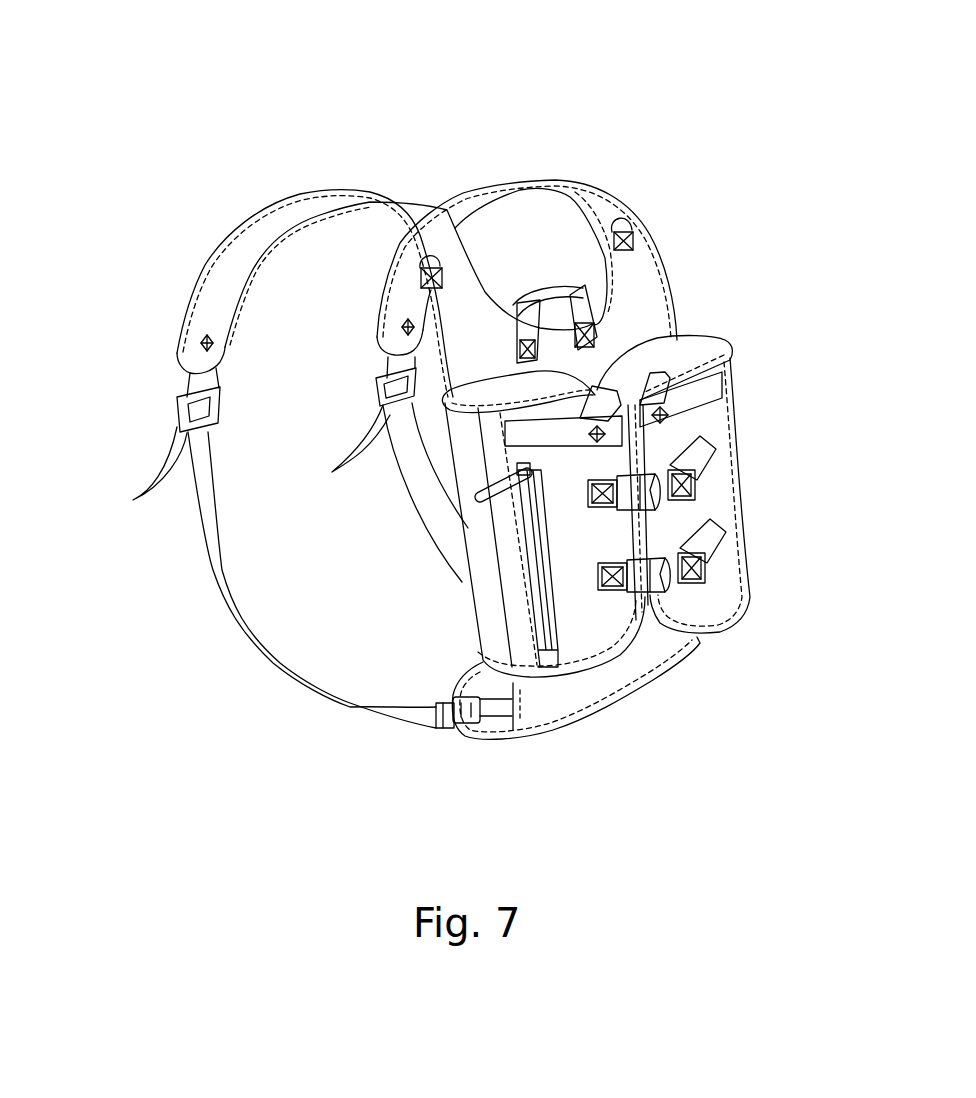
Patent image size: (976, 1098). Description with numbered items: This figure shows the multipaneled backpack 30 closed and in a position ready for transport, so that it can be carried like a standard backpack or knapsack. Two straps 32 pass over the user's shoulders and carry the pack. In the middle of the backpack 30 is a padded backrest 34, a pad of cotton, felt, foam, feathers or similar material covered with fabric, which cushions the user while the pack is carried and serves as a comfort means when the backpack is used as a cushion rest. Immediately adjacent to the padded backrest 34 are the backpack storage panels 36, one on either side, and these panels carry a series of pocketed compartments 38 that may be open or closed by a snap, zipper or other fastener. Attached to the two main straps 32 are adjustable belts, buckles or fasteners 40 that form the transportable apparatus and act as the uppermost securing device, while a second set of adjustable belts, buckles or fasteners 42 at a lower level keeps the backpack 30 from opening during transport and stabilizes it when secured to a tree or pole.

The multipaneled backpack 30 is at (229, 88).
The straps 32 is at (398, 216).
The padded backrest 34 is at (623, 678).
The backpack storage panels 36 is at (593, 557).
The pocketed compartments 38 is at (470, 504).
The adjustable belts, buckles or fasteners 40 is at (180, 413).
The second set of adjustable belts, buckles or fasteners 42 is at (700, 465).